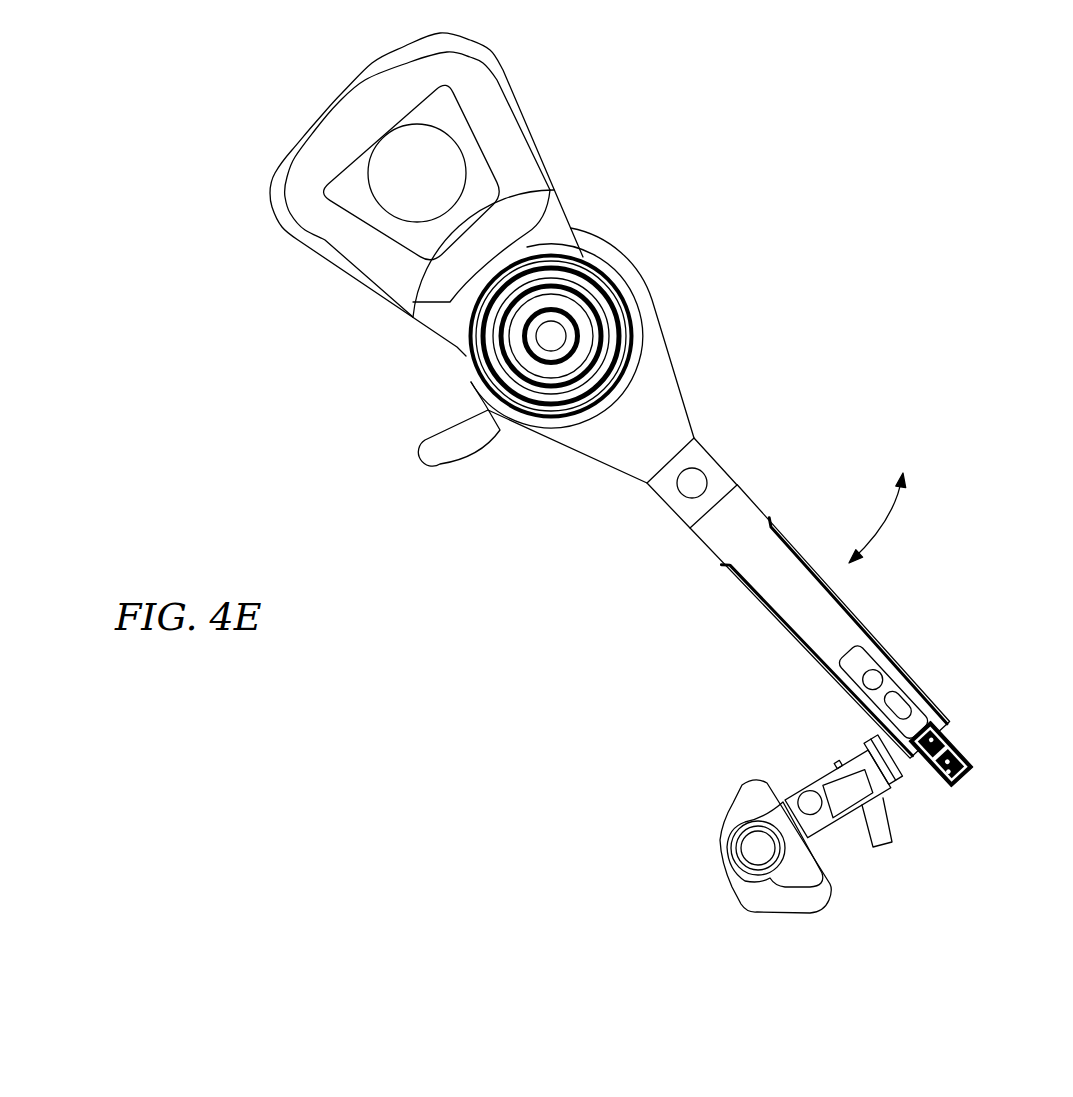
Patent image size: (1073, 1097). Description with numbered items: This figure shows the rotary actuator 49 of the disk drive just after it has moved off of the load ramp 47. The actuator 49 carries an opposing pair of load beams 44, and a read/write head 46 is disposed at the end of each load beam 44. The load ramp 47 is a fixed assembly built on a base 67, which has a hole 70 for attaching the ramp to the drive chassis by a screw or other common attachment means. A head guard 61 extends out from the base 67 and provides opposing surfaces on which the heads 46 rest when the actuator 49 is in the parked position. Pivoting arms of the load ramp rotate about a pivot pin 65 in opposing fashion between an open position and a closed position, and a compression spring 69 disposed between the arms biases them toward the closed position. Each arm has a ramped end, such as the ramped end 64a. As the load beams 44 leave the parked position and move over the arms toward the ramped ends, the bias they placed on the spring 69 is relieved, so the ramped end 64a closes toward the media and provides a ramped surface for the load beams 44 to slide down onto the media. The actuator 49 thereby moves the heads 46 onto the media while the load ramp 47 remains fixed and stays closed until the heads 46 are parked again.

The actuator 49 is at (707, 297).
The load beam 44 is at (770, 563).
The read/write head 46 is at (972, 764).
The load ramp 47 is at (843, 884).
The base 67 is at (747, 803).
The hole 70 is at (758, 850).
The pivot pin 65 is at (837, 762).
The ramped end 64a is at (866, 758).
The compression spring 69 is at (793, 797).
The head guard 61 is at (870, 848).